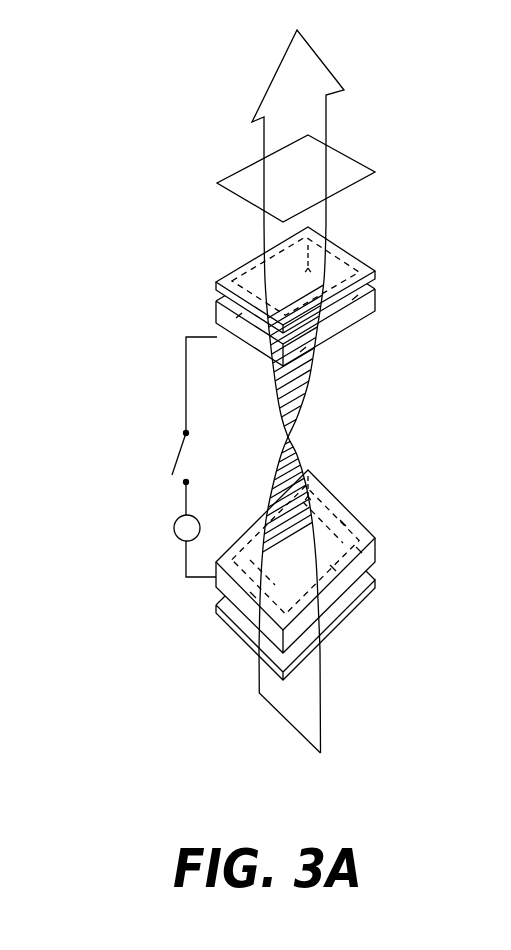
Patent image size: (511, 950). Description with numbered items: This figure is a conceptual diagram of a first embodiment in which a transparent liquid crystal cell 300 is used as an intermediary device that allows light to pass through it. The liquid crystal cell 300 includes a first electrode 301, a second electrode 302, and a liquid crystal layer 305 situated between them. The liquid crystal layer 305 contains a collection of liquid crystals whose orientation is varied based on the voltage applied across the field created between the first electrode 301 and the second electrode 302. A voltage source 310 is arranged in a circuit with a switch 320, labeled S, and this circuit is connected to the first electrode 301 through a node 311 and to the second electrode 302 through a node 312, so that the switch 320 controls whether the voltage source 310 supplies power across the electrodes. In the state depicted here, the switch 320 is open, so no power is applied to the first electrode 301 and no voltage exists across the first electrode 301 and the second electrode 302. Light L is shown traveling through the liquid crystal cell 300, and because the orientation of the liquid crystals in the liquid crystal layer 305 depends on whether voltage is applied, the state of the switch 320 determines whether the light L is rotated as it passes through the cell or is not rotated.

The liquid crystal cell 300 is at (128, 201).
The first electrode 301 is at (376, 298).
The second electrode 302 is at (340, 625).
The liquid crystal layer 305 is at (303, 387).
The voltage source 310 is at (174, 528).
The node 311 is at (184, 483).
The node 312 is at (186, 570).
The switch 320 is at (171, 466).
The switch S is at (204, 465).
The light L is at (313, 703).